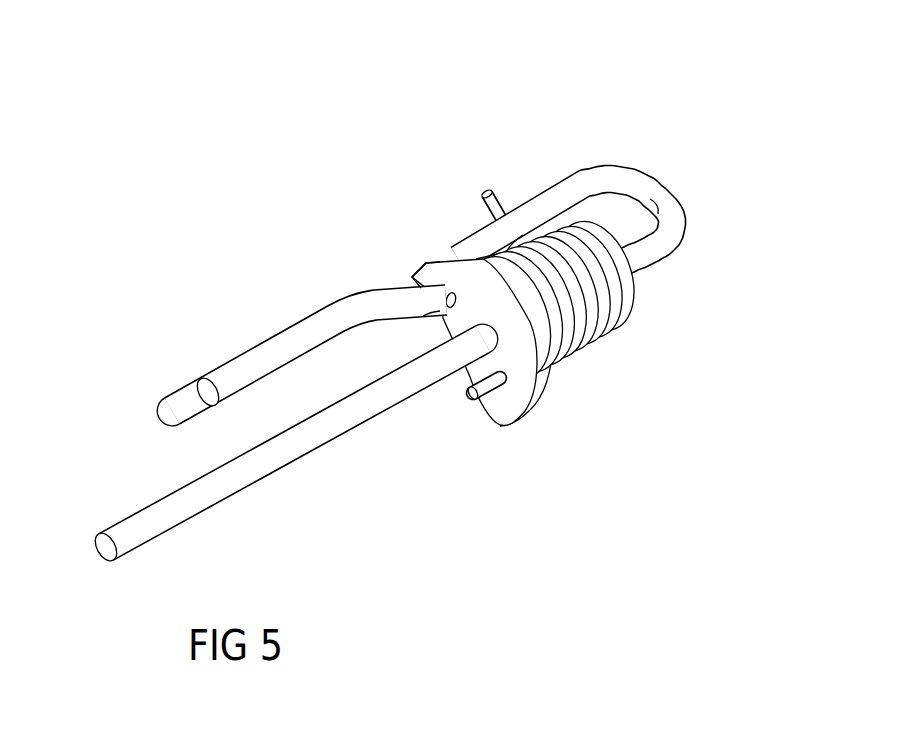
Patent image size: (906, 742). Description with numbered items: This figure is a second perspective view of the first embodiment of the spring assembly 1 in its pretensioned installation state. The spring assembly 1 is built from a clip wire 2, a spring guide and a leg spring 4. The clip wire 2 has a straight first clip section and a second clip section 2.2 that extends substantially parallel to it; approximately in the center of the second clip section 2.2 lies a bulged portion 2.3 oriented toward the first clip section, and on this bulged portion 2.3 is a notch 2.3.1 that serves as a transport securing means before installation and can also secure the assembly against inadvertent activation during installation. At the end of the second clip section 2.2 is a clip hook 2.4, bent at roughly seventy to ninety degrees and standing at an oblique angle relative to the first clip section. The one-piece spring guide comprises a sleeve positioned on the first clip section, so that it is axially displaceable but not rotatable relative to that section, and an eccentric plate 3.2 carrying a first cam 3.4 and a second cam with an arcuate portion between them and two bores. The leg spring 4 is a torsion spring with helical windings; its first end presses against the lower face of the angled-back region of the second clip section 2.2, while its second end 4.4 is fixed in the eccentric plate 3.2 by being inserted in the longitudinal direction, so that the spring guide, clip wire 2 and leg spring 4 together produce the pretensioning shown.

The spring assembly 1 is at (415, 312).
The clip wire 2 is at (677, 228).
The second clip section 2.2 is at (300, 337).
The bulged portion 2.3 is at (420, 289).
The notch 2.3.1 is at (429, 264).
The clip hook 2.4 is at (170, 412).
The eccentric plate 3.2 is at (537, 400).
The first cam 3.4 is at (412, 275).
The leg spring 4 is at (607, 318).
The second end 4.4 is at (480, 392).